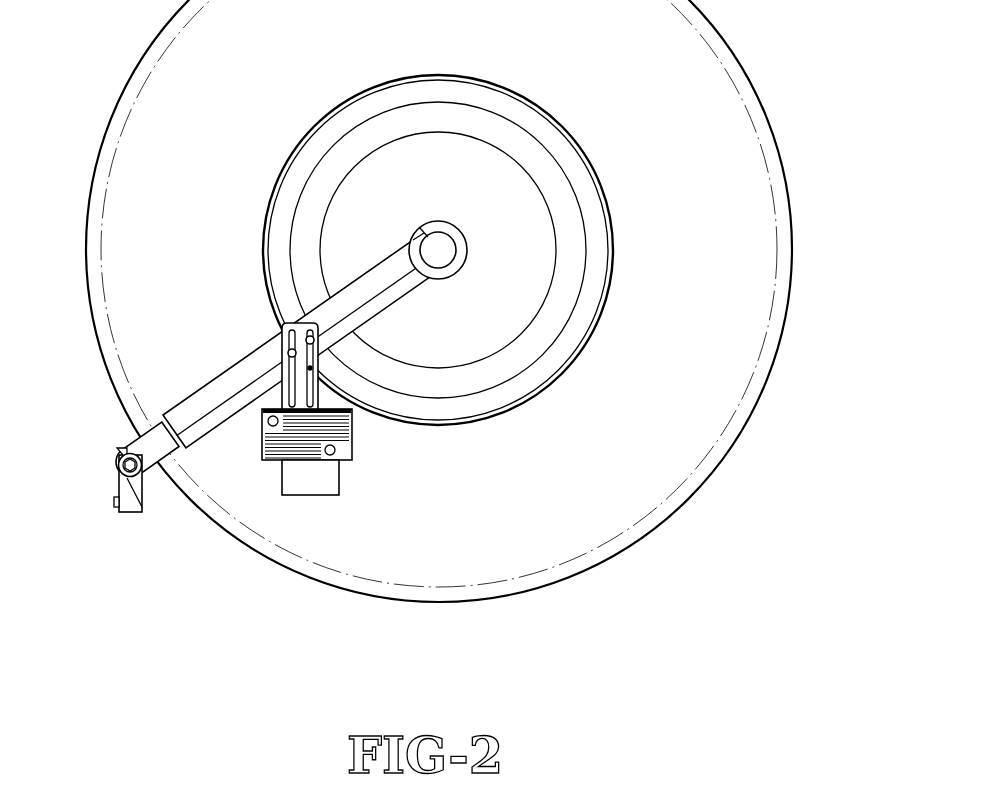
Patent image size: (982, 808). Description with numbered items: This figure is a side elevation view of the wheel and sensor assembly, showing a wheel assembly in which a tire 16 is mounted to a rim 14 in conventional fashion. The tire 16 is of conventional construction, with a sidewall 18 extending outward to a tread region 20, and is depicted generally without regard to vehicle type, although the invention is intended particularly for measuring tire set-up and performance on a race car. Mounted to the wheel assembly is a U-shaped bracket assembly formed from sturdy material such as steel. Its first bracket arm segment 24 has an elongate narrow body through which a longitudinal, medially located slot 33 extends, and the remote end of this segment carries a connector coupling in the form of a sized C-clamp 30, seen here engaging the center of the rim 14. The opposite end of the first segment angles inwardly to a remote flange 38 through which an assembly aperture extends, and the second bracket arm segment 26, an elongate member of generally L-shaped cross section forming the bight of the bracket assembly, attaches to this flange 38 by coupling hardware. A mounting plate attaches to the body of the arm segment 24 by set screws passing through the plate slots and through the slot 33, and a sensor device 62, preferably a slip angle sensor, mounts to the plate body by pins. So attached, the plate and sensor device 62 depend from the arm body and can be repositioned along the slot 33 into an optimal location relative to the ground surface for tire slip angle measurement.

The rim 14 is at (562, 149).
The tire 16 is at (444, 306).
The sidewall 18 is at (677, 433).
The tread region 20 is at (587, 572).
The first bracket arm segment 24 is at (218, 422).
The second bracket arm segment 26 is at (127, 511).
The C-clamp 30 is at (443, 273).
The slot 33 is at (222, 397).
The remote flange 38 is at (173, 458).
The sensor device 62 is at (300, 483).